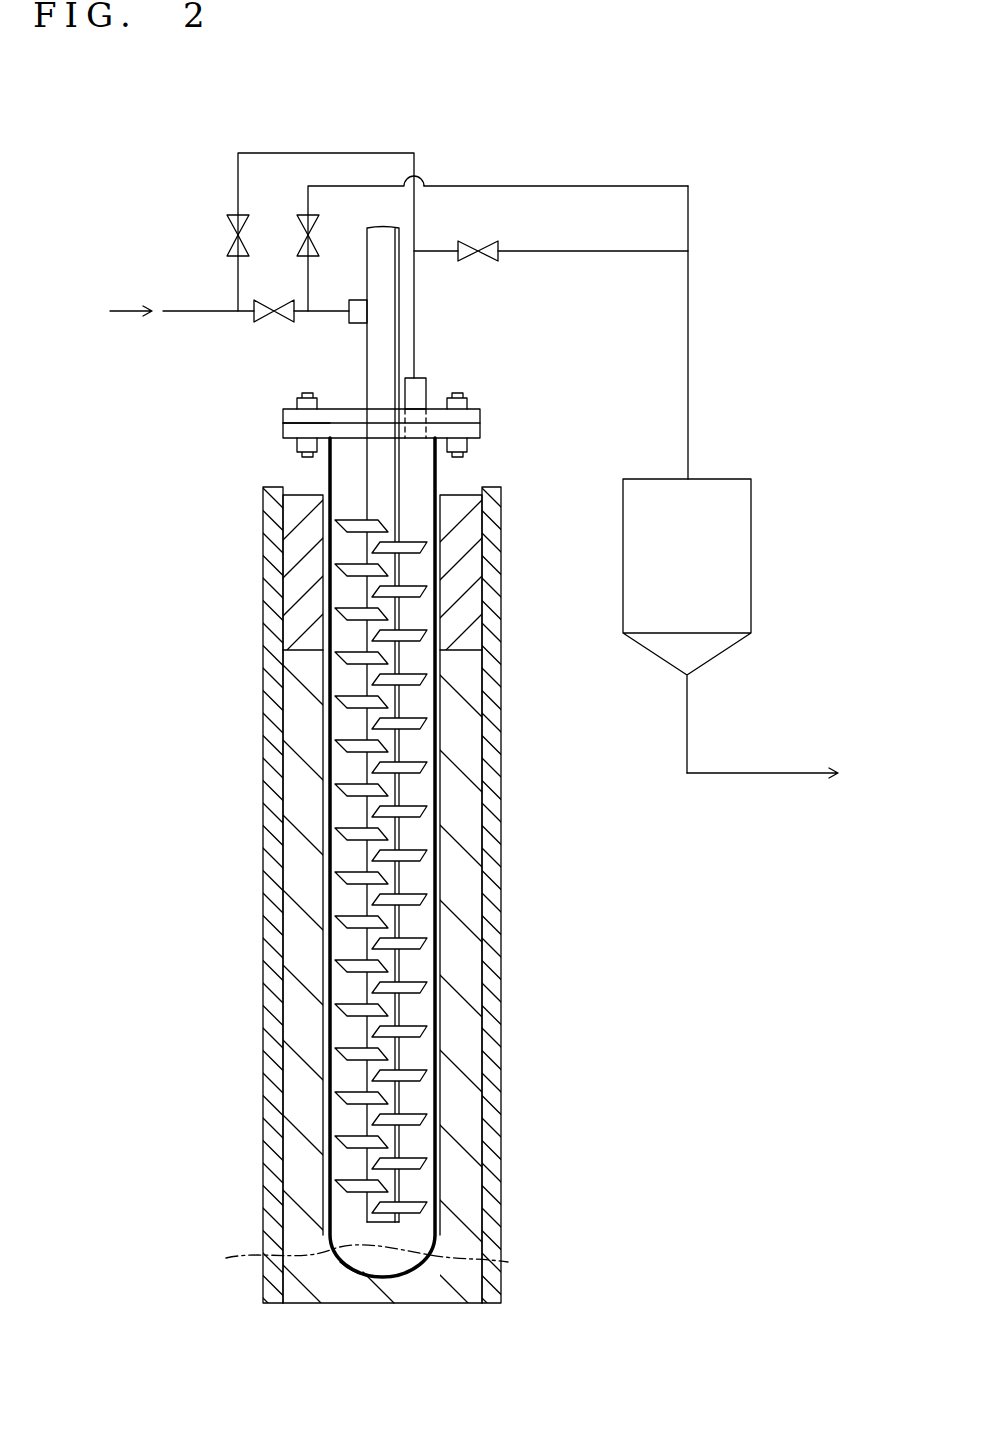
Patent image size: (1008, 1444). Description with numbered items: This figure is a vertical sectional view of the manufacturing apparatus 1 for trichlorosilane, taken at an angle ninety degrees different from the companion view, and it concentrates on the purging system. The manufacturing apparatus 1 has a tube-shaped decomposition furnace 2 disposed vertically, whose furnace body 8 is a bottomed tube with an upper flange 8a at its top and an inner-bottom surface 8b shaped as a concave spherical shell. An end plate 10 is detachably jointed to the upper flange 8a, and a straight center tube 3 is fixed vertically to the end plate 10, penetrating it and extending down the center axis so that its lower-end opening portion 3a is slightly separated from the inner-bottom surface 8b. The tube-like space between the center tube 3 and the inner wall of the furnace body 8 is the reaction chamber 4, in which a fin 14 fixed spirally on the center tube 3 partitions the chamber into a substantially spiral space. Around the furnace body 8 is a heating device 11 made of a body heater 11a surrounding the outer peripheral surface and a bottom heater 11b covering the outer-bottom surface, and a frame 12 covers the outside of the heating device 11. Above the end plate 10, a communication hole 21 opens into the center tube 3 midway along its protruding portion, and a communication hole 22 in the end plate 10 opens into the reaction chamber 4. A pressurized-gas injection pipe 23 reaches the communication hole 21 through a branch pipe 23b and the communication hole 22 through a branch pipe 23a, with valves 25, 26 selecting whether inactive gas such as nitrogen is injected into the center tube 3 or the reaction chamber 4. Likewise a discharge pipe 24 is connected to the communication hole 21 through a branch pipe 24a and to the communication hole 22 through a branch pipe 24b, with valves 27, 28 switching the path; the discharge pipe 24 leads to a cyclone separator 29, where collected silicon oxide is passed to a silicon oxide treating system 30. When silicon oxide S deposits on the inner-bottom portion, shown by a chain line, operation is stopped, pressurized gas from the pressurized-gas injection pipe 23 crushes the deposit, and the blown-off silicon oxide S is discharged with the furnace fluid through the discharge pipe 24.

The manufacturing apparatus 1 is at (164, 455).
The decomposition furnace 2 is at (256, 615).
The center tube 3 is at (399, 490).
The lower-end opening portion 3a is at (382, 1223).
The reaction chamber 4 is at (425, 875).
The furnace body 8 is at (437, 743).
The upper flange 8a is at (282, 432).
The inner-bottom surface 8b is at (350, 1270).
The end plate 10 is at (482, 418).
The heating device 11 is at (275, 1110).
The body heater 11a is at (308, 725).
The bottom heater 11b is at (425, 1282).
The frame 12 is at (490, 976).
The fin 14 is at (335, 920).
The communication hole 21 is at (348, 305).
The communication hole 22 is at (417, 373).
The pressurized-gas injection pipe 23 is at (192, 305).
The branch pipe 23a is at (283, 153).
The branch pipe 23b is at (322, 313).
The discharge pipe 24 is at (690, 360).
The branch pipe 24a is at (557, 185).
The branch pipe 24b is at (578, 252).
The valve 25 is at (227, 227).
The valve 26 is at (253, 317).
The valve 27 is at (303, 235).
The valve 28 is at (475, 243).
The cyclone separator 29 is at (752, 518).
The silicon oxide treating system 30 is at (772, 775).
The silicon oxide S is at (356, 1264).